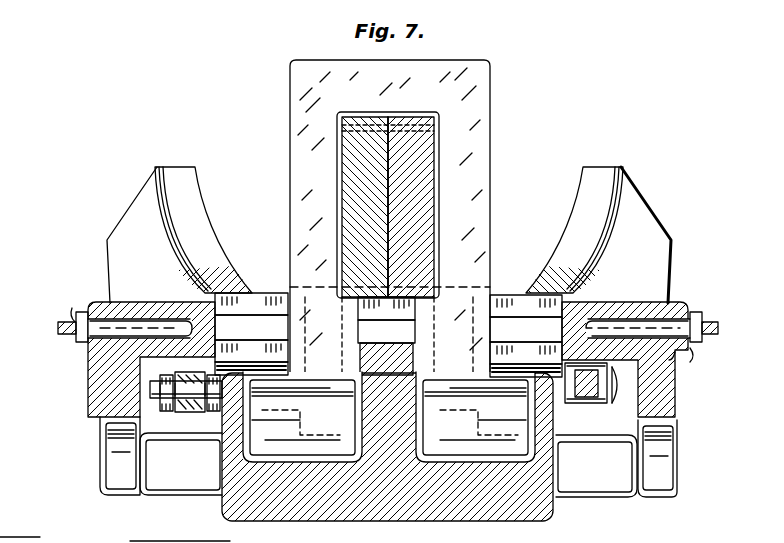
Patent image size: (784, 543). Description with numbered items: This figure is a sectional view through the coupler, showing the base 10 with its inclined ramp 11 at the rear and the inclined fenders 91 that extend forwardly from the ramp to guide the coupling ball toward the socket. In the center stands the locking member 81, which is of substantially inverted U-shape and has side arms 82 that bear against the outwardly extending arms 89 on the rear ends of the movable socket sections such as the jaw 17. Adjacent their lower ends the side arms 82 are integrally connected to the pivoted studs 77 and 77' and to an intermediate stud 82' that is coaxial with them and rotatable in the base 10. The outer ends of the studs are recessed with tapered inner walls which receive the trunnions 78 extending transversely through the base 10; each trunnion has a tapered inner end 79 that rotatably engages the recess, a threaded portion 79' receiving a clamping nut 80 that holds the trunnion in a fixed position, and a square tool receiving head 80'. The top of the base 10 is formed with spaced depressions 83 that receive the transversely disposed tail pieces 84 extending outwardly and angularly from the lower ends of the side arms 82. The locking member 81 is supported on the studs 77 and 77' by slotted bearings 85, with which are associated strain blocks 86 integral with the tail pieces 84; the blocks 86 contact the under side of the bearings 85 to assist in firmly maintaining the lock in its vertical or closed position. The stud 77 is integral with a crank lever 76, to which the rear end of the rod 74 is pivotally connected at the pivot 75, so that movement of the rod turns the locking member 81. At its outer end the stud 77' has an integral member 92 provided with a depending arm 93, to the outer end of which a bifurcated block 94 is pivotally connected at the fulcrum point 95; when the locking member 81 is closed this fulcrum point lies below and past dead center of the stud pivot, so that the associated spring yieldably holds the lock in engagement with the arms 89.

The base 10 is at (660, 392).
The inclined ramp 11 is at (652, 478).
The movable section 17 is at (148, 541).
The rod 74 is at (585, 394).
The pivotal connection 75 is at (616, 396).
The crank lever 76 is at (585, 318).
The pivoted stud 77 is at (526, 307).
The pivoted stud 77' is at (251, 290).
The trunnion 78 is at (105, 325).
The tapered inner end 79 is at (390, 235).
The threaded portion 79' is at (380, 327).
The clamping nut 80 is at (394, 336).
The square tool receiving head 80' is at (391, 337).
The locking member 81 is at (462, 75).
The side arm 82 is at (385, 209).
The intermediate stud 82' is at (415, 336).
The depression 83 is at (231, 500).
The tail piece 84 is at (320, 445).
The slotted bearing 85 is at (264, 305).
The strain block 86 is at (214, 470).
The arm 89 is at (352, 150).
The inclined fender 91 is at (192, 203).
The integral member 92 is at (123, 332).
The depending arm 93 is at (190, 414).
The bifurcated block 94 is at (166, 414).
The fulcrum point 95 is at (152, 388).